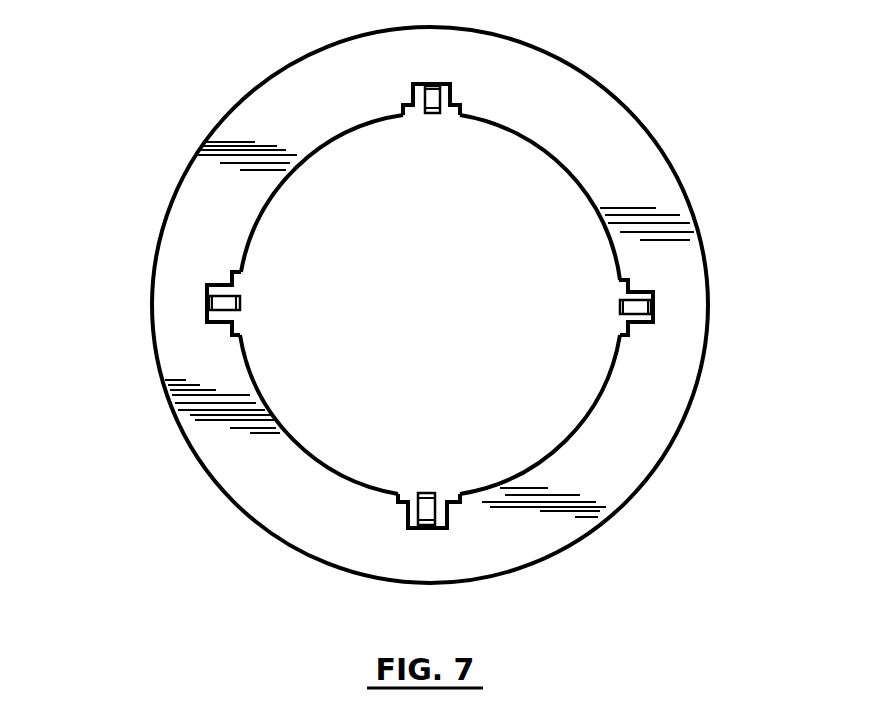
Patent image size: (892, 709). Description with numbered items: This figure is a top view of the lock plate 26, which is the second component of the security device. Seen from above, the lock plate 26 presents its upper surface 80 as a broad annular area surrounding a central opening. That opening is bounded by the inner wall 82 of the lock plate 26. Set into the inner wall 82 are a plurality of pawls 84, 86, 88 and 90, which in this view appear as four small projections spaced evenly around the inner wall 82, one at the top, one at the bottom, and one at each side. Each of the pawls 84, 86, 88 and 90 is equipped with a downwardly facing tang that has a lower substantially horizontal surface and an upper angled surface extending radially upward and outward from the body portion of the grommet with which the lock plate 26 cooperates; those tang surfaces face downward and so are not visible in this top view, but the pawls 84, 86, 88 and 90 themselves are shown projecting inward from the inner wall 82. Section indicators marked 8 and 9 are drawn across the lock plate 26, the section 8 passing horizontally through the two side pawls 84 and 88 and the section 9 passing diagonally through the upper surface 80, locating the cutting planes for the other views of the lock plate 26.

The lock plate 26 is at (166, 120).
The upper surface 80 is at (623, 458).
The inner wall 82 is at (572, 175).
The pawl 84 is at (243, 300).
The pawl 86 is at (426, 493).
The pawl 88 is at (618, 308).
The pawl 90 is at (432, 115).
The section line 8- 8 is at (143, 300).
The section line 9- 9 is at (222, 506).